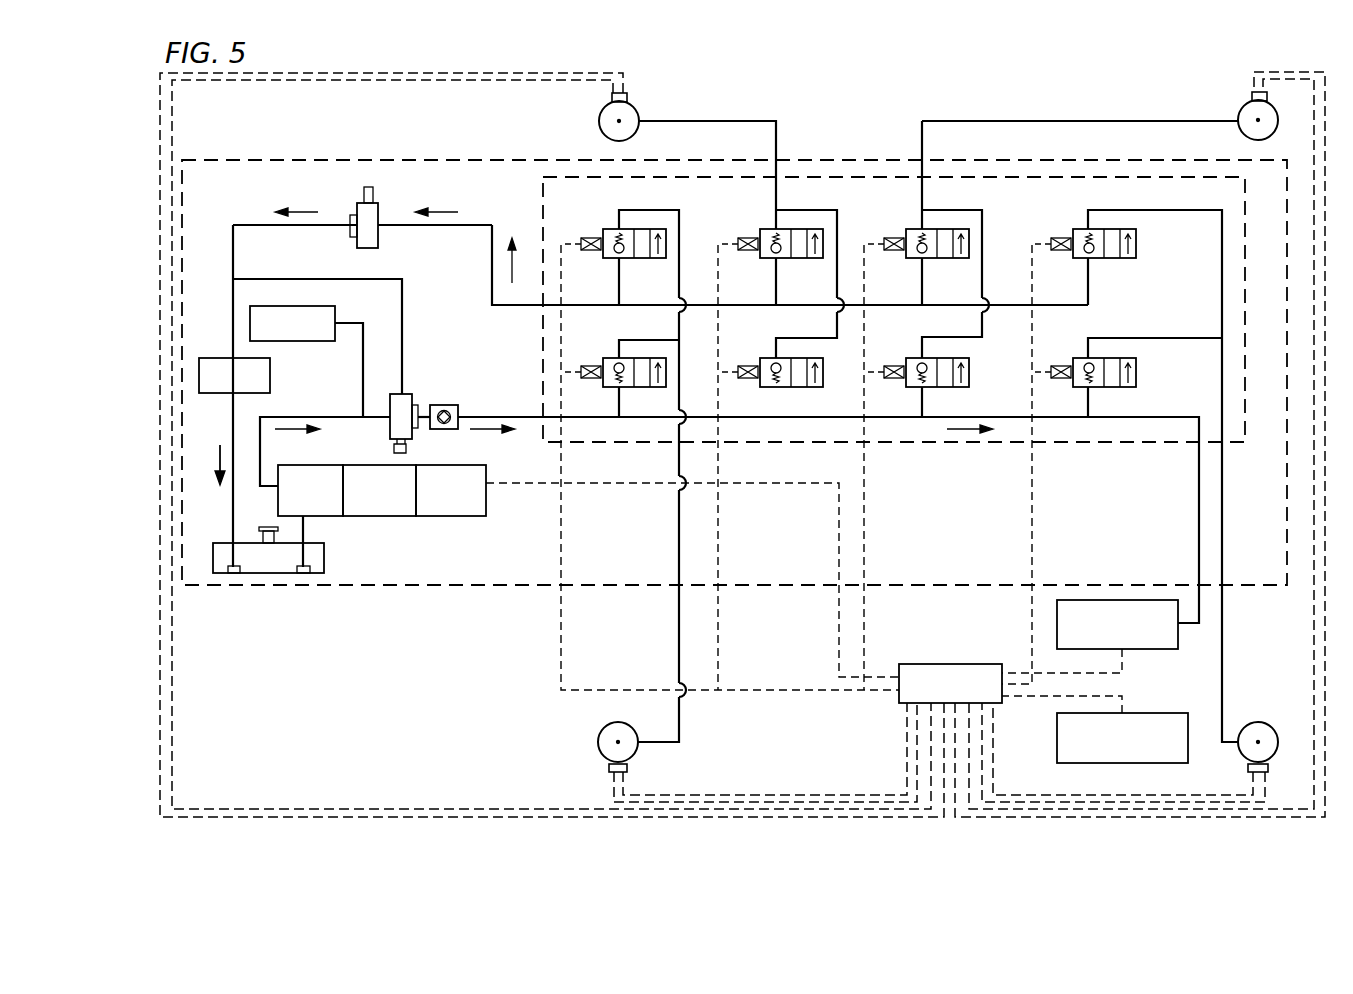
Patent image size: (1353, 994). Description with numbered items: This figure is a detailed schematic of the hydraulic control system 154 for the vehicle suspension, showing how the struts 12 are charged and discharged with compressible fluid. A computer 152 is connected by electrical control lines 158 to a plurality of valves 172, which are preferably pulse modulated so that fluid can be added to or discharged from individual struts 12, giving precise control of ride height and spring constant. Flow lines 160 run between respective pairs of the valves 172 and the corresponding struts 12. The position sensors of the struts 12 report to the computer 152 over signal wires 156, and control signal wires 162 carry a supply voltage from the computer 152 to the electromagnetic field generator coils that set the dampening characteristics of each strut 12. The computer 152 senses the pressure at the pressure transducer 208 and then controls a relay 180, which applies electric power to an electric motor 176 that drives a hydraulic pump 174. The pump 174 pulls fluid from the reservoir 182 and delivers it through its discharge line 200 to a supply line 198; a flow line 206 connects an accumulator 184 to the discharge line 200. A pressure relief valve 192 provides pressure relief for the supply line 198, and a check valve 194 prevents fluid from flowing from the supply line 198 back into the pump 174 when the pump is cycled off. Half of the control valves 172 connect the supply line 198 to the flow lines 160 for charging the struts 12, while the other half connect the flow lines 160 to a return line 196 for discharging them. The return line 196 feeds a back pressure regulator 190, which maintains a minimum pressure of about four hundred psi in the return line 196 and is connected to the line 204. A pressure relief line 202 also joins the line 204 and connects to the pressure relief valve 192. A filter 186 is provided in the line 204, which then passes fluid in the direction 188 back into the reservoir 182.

The strut 12 is at (636, 108).
The computer 152 is at (899, 696).
The control system 154 is at (1162, 108).
The signal wires 156 is at (538, 73).
The electrical control lines 158 is at (1032, 535).
The flow lines 160 is at (737, 120).
The control signal wires 162 is at (492, 80).
The valves 172 is at (642, 259).
The hydraulic pump 174 is at (328, 516).
The electric motor 176 is at (395, 516).
The relay 180 is at (466, 516).
The reservoir 182 is at (217, 557).
The accumulator 184 is at (287, 341).
The filter 186 is at (217, 358).
The flow direction 188 is at (220, 447).
The back pressure regulator 190 is at (360, 210).
The pressure relief valve 192 is at (405, 397).
The check valve 194 is at (458, 407).
The return line 196 is at (1057, 746).
The supply line 198 is at (518, 416).
The discharge line 200 is at (280, 417).
The pressure relief line 202 is at (386, 278).
The line 204 is at (233, 297).
The flow line 206 is at (364, 345).
The pressure transducer 208 is at (1142, 650).